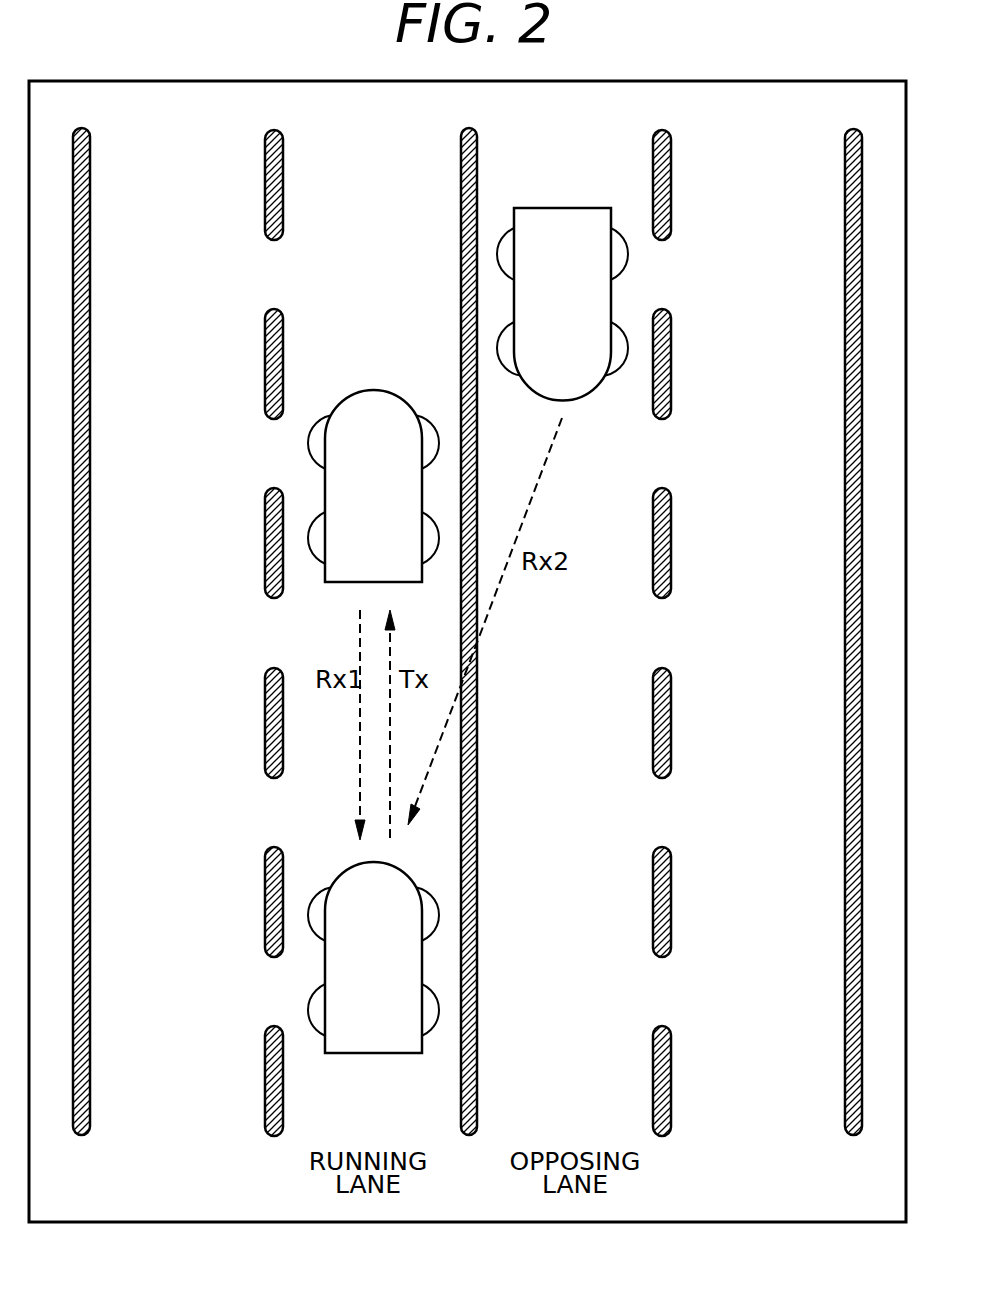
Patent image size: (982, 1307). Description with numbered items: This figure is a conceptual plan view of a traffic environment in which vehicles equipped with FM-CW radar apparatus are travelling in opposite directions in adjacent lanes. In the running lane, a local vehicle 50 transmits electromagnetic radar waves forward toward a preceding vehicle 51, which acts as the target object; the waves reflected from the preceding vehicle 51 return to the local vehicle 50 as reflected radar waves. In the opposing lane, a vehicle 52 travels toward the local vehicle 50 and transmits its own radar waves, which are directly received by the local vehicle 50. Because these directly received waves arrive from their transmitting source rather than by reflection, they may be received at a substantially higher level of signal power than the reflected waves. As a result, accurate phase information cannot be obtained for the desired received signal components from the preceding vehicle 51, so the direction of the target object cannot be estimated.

The local vehicle 50 is at (376, 1054).
The preceding vehicle 51 is at (374, 388).
The vehicle running in an opposing traffic lane 52 is at (565, 208).